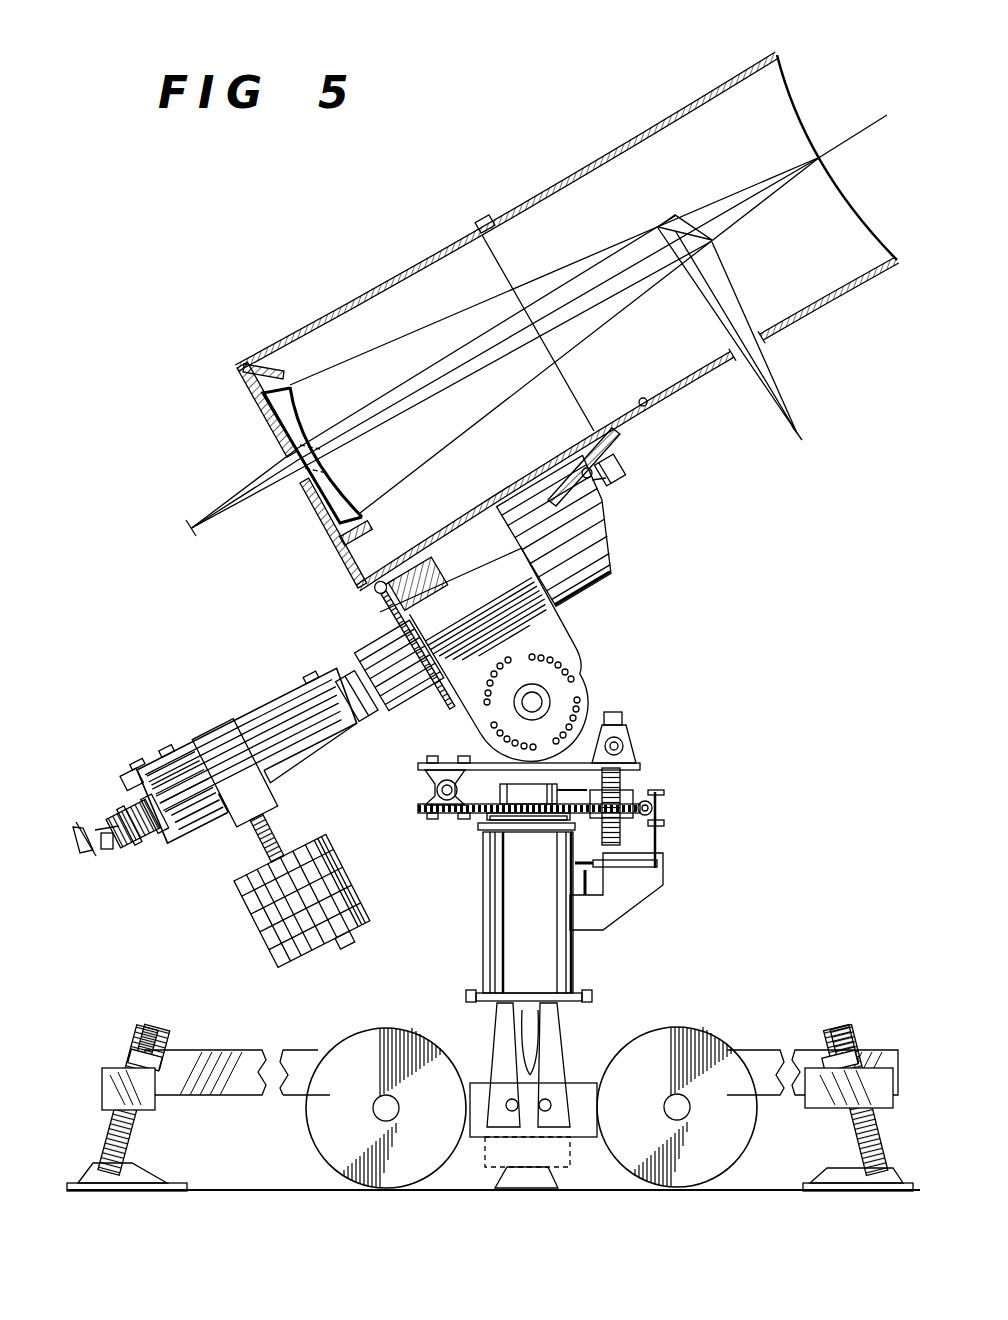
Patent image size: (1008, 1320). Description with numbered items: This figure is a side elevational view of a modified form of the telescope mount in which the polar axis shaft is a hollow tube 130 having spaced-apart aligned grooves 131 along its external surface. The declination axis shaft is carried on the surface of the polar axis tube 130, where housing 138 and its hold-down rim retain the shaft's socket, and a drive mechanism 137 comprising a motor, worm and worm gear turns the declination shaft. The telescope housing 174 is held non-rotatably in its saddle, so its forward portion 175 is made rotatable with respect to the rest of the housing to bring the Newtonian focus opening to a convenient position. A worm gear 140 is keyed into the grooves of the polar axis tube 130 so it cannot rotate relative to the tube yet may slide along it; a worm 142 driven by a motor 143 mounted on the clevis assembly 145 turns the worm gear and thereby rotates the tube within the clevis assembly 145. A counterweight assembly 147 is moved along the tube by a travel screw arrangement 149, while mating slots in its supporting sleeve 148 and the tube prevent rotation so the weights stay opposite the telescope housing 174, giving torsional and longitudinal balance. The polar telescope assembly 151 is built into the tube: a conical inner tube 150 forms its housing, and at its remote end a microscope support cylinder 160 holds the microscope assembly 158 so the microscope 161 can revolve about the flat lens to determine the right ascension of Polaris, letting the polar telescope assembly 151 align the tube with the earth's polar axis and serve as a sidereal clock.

The hollow tube 130 is at (418, 698).
The grooves 131 is at (327, 742).
The drive mechanism 137 is at (618, 470).
The housing 138 is at (516, 534).
The worm gear 140 is at (398, 615).
The worm 142 is at (377, 594).
The motor 143 is at (440, 582).
The clevis assembly 145 is at (576, 662).
The counterweight assembly 147 is at (348, 870).
The supporting sleeve 148 is at (275, 810).
The travel screw arrangement 149 is at (250, 696).
The inner tube 150 is at (366, 714).
The polar telescope assembly 151 is at (155, 735).
The microscope assembly 158 is at (107, 862).
The microscope support cylinder 160 is at (122, 848).
The microscope 161 is at (84, 826).
The telescope housing 174 is at (566, 468).
The forward portion 175 is at (647, 407).